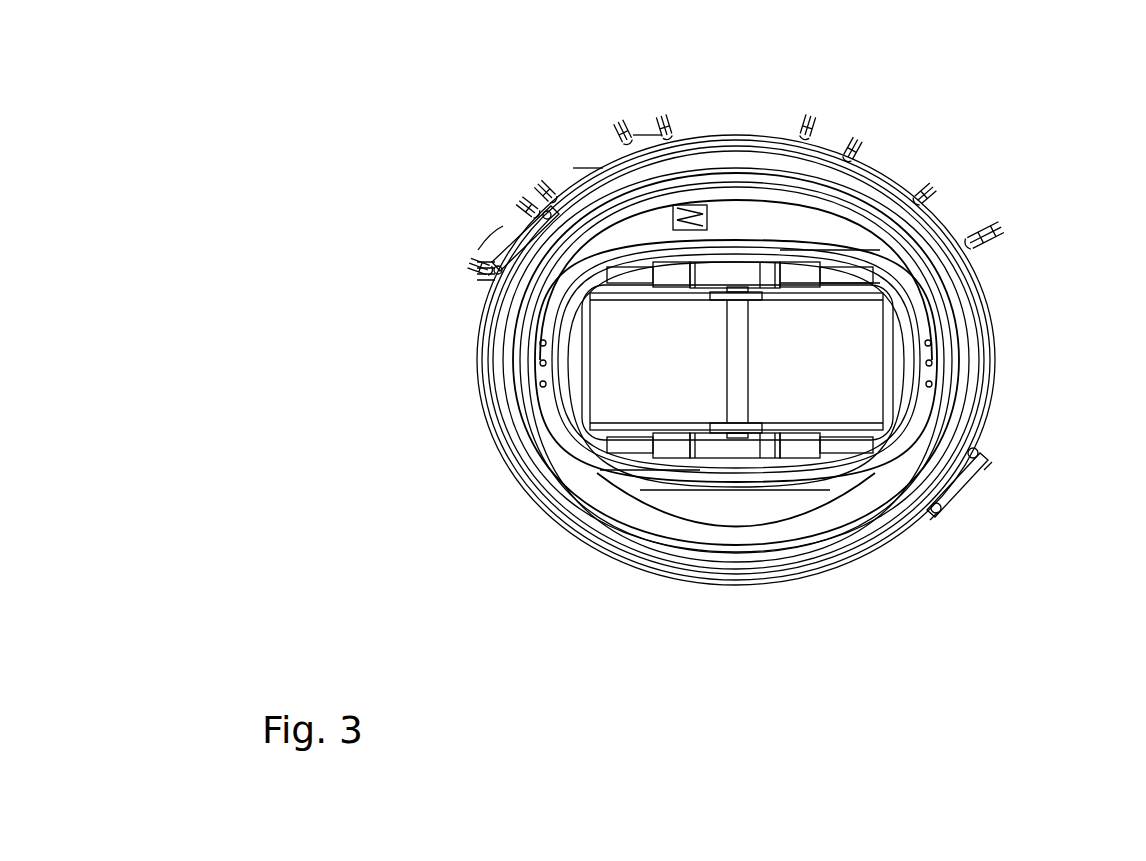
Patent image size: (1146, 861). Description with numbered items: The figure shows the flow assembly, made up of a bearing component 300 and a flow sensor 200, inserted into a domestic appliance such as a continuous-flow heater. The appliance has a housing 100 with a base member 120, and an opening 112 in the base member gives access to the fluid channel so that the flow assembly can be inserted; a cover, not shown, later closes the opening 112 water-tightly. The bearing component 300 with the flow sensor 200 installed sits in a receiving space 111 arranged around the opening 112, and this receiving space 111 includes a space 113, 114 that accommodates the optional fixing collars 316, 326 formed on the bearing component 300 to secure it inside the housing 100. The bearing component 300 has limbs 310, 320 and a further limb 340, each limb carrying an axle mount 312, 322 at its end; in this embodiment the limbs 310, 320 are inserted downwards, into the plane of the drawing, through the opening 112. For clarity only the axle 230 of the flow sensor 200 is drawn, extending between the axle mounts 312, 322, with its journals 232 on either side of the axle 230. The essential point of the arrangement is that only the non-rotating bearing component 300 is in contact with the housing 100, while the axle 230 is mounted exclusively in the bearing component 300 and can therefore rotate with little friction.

The housing 100 is at (298, 212).
The receiving space 111 is at (800, 252).
The opening 112 is at (663, 385).
The space for fixing collar 113 is at (803, 282).
The space for fixing collar 114 is at (673, 447).
The base member 120 is at (605, 167).
The flow sensor 200 is at (807, 504).
The axle 230 is at (737, 363).
The journals 232 is at (723, 288).
The bearing component 300 is at (550, 320).
The limb 310 is at (603, 251).
The axle mount 312 is at (740, 272).
The fixing collar 316 is at (770, 266).
The limb 320 is at (857, 247).
The axle mount 322 is at (747, 453).
The fixing collar 326 is at (773, 460).
The limb 340 is at (847, 467).